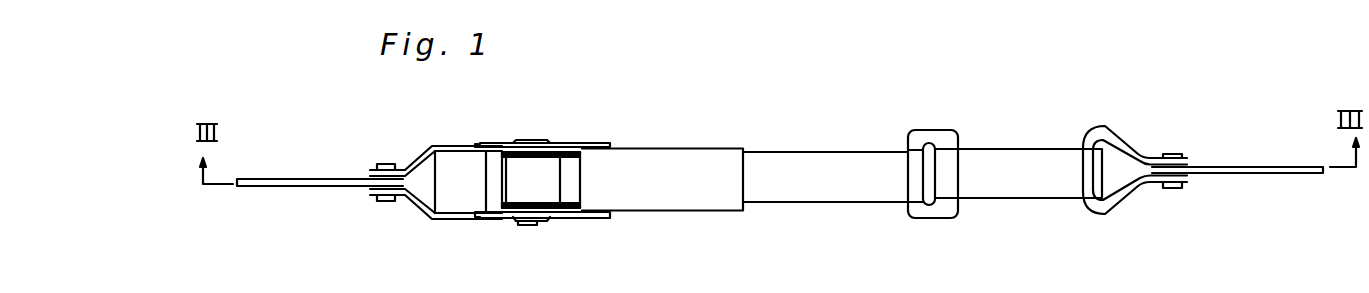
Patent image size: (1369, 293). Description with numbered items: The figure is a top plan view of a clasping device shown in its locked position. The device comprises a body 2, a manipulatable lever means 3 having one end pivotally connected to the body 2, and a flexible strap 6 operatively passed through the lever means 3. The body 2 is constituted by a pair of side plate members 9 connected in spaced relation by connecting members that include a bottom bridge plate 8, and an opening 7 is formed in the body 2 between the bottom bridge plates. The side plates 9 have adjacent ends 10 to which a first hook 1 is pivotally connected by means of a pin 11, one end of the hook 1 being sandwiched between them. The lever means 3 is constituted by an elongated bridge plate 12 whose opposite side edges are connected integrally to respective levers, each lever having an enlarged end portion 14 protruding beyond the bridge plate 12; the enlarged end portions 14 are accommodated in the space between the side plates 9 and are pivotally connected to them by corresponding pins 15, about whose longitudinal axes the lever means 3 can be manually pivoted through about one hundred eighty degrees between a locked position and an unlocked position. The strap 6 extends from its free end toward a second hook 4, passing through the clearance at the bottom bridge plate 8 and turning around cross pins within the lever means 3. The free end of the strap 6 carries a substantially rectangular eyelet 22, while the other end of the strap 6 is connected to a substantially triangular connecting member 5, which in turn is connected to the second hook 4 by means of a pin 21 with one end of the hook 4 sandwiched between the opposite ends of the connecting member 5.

The first hook 1 is at (303, 183).
The body 2 is at (602, 218).
The manipulatable lever means 3 is at (705, 210).
The second hook 4 is at (1257, 167).
The connecting member 5 is at (1118, 205).
The flexible strap 6 is at (1013, 185).
The opening 7 is at (492, 162).
The bottom bridge plate 8 is at (460, 198).
The side plate members 9 is at (593, 143).
The adjacent ends 10 is at (413, 157).
The pin 11 is at (387, 200).
The elongated bridge plate 12 is at (693, 163).
The enlarged end portion 14 is at (530, 151).
The pin 15 is at (522, 139).
The pin 21 is at (1172, 188).
The eyelet 22 is at (947, 145).